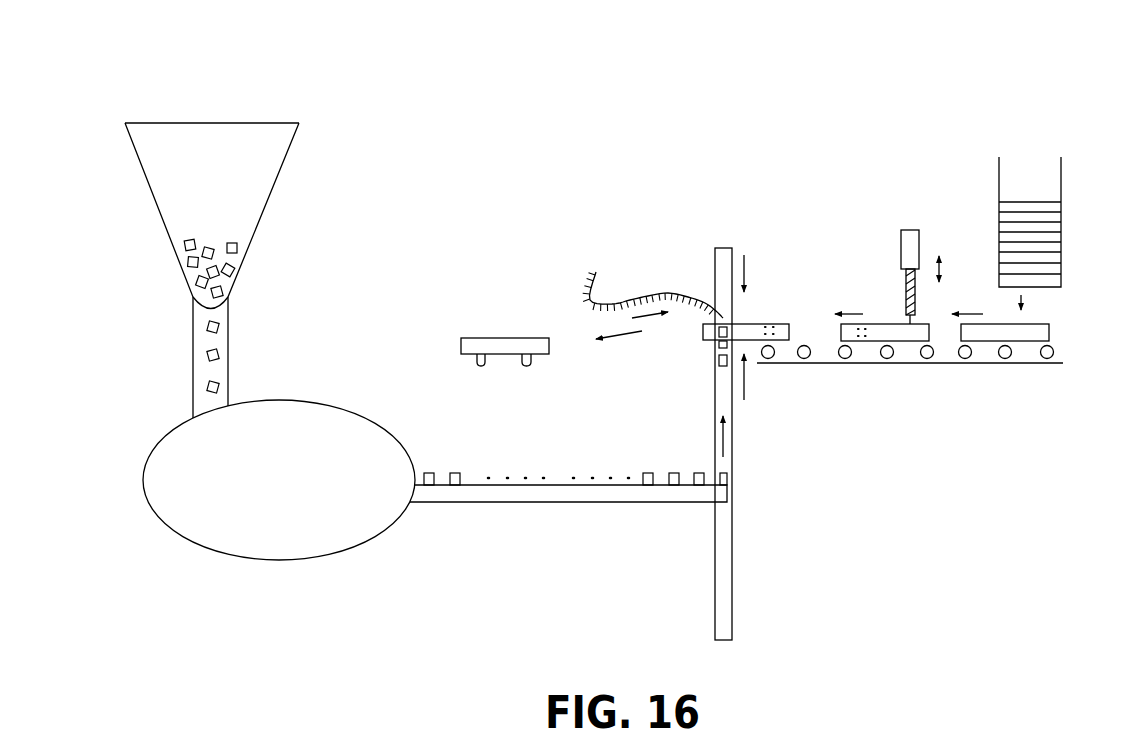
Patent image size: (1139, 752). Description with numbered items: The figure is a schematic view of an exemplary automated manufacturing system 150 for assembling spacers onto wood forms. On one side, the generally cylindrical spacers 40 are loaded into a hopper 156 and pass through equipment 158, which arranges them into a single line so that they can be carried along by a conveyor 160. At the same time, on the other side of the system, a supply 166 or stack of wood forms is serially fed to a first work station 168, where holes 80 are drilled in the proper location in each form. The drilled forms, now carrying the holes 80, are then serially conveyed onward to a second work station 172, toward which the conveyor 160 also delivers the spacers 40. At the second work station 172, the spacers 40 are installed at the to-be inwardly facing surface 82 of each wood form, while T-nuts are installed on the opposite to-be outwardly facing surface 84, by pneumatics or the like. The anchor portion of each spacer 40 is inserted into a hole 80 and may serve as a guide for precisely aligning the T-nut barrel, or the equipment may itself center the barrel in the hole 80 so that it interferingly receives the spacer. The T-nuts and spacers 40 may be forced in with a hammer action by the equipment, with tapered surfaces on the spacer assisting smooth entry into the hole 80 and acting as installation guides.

The automated manufacturing system 150 is at (792, 68).
The hopper 156 is at (287, 150).
The spacer 40 is at (235, 268).
The equipment 158 is at (295, 489).
The conveyor 160 is at (580, 496).
The second work station 172 is at (675, 259).
The to-be outwardly facing surface 84 is at (757, 324).
The to-be inwardly facing surface 82 is at (708, 343).
The hole 80 is at (863, 343).
The first work station 168 is at (879, 259).
The supply 166 is at (1042, 256).